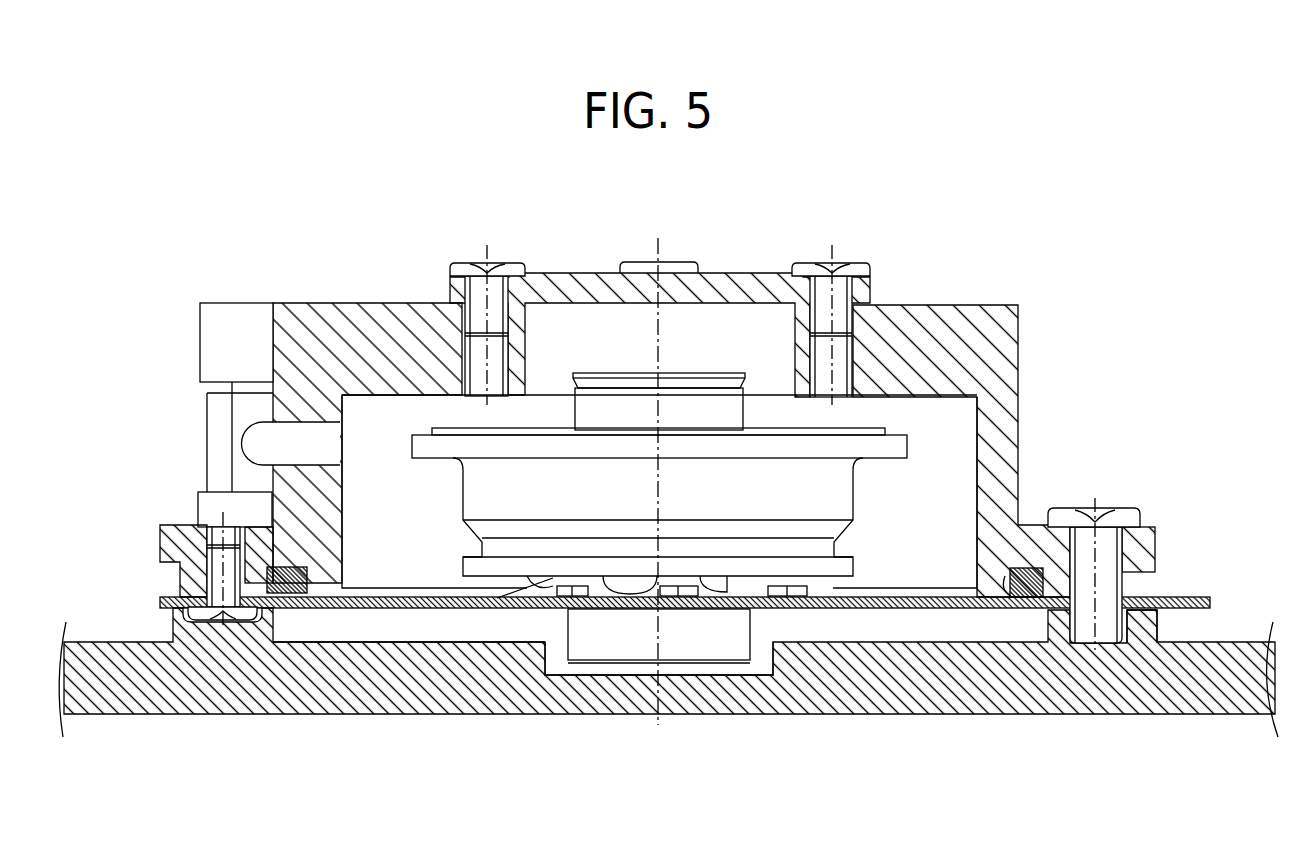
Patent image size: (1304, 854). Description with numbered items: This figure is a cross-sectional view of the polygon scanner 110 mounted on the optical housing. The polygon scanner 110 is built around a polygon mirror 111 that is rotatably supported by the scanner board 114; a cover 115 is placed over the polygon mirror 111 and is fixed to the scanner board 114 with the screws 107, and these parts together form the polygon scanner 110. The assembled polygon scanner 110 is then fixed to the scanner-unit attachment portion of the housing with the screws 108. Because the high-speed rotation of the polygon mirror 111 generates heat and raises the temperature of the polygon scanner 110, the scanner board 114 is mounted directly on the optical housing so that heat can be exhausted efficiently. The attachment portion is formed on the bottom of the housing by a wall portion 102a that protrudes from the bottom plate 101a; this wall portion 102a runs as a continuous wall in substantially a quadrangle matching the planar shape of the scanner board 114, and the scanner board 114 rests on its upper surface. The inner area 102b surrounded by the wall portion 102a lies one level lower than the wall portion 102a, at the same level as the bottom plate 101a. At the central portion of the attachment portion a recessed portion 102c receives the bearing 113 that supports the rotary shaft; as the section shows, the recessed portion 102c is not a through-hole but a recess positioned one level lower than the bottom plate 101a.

The bottom plate 101a is at (930, 708).
The wall portion 102a is at (1153, 631).
The inner area 102b is at (372, 625).
The recessed portion 102c is at (558, 657).
The screws 107 is at (213, 580).
The screws 108 is at (1106, 512).
The polygon scanner 110 is at (1169, 299).
The polygon mirror 111 is at (446, 445).
The bearing 113 is at (730, 632).
The scanner board 114 is at (1182, 598).
The cover 115 is at (928, 320).